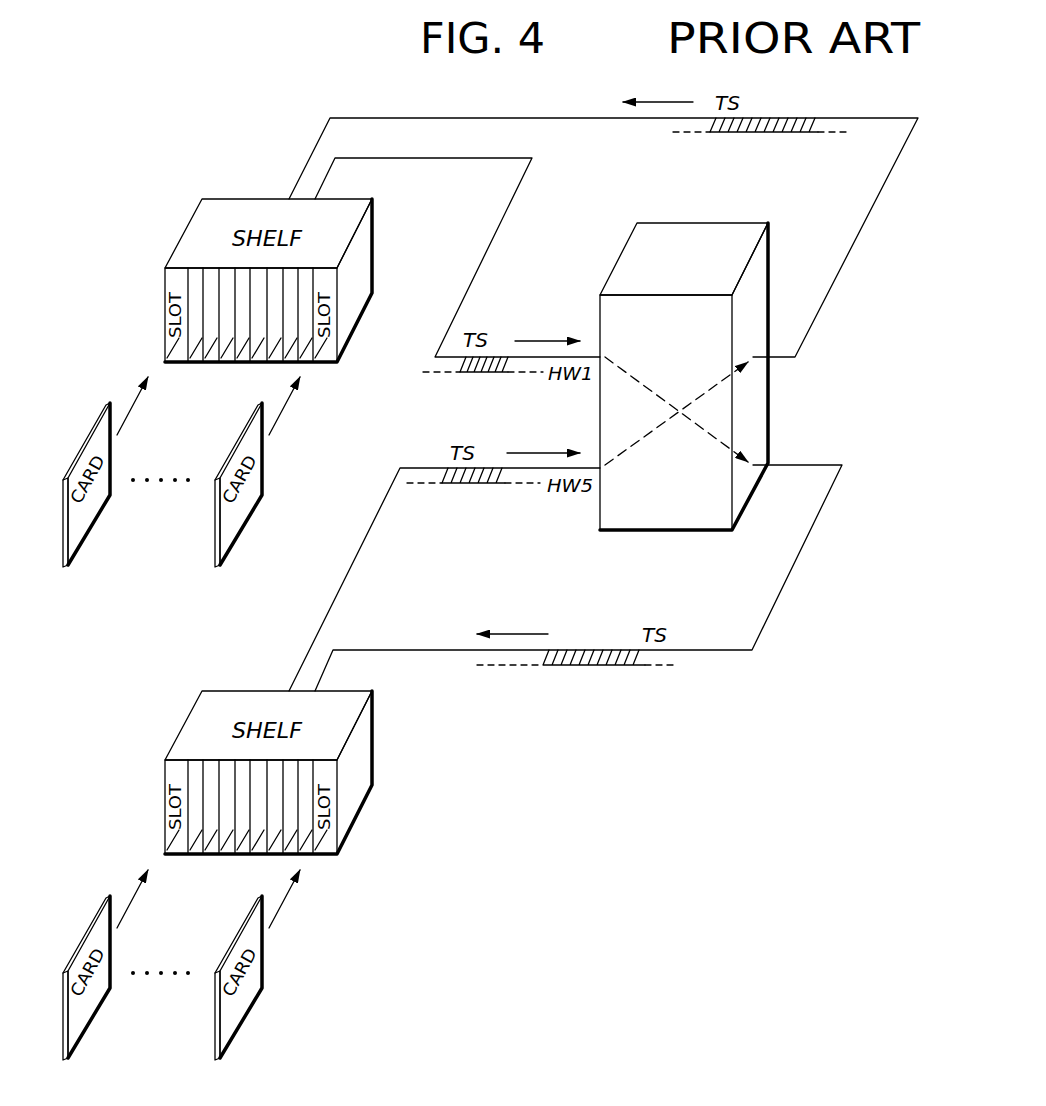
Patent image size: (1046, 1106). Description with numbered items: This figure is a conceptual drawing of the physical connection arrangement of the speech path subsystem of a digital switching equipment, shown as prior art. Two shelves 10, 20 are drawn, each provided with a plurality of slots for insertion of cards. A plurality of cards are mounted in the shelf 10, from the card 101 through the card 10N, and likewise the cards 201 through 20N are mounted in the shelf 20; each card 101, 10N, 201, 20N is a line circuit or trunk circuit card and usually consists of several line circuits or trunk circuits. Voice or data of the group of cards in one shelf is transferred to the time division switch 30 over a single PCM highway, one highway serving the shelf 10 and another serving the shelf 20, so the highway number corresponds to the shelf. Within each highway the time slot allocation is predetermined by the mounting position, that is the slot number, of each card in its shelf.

The shelf 10 is at (186, 218).
The shelf 20 is at (186, 711).
The time division switch 30 is at (746, 220).
The card 101 is at (88, 432).
The card 10N is at (215, 522).
The card 201 is at (88, 925).
The card 20N is at (215, 1015).